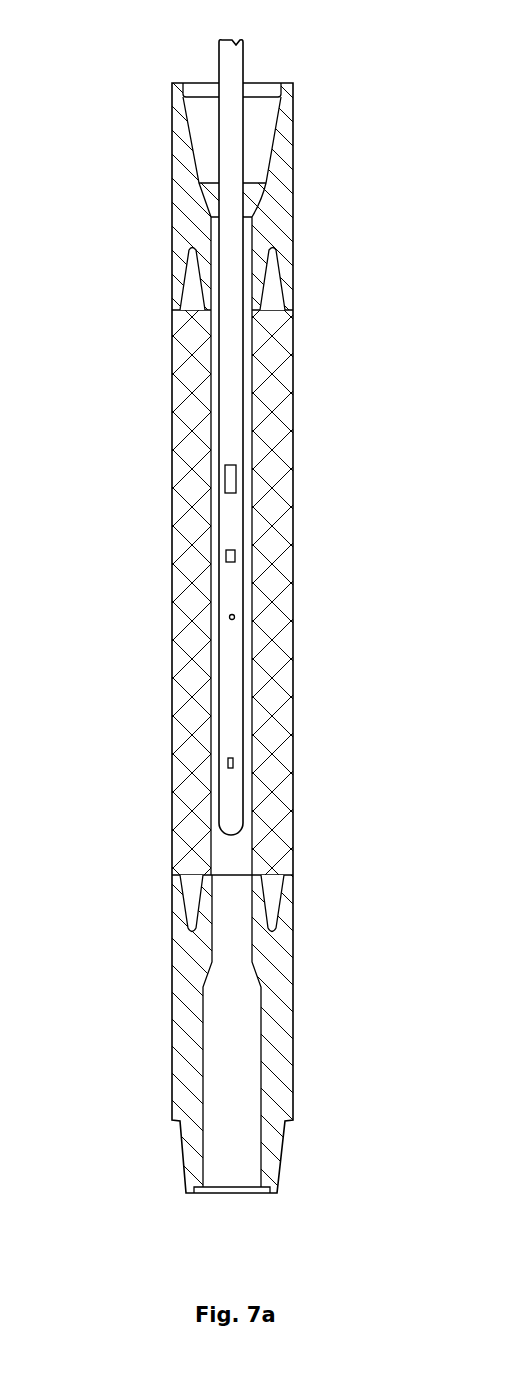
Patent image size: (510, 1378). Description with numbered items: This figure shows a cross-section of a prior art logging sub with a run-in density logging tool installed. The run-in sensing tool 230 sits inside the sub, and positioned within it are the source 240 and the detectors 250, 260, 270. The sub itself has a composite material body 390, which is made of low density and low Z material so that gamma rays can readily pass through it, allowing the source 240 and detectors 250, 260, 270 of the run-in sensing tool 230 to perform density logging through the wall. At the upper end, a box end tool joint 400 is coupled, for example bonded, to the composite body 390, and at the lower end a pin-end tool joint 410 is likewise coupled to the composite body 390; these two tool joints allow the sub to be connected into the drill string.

The run-in sensing tool 230 is at (234, 58).
The source 240 is at (233, 764).
The detector 250 is at (234, 618).
The detector 260 is at (235, 558).
The detector 270 is at (236, 483).
The composite material body 390 is at (172, 630).
The box end tool joint 400 is at (172, 197).
The pin-end tool joint 410 is at (172, 1036).